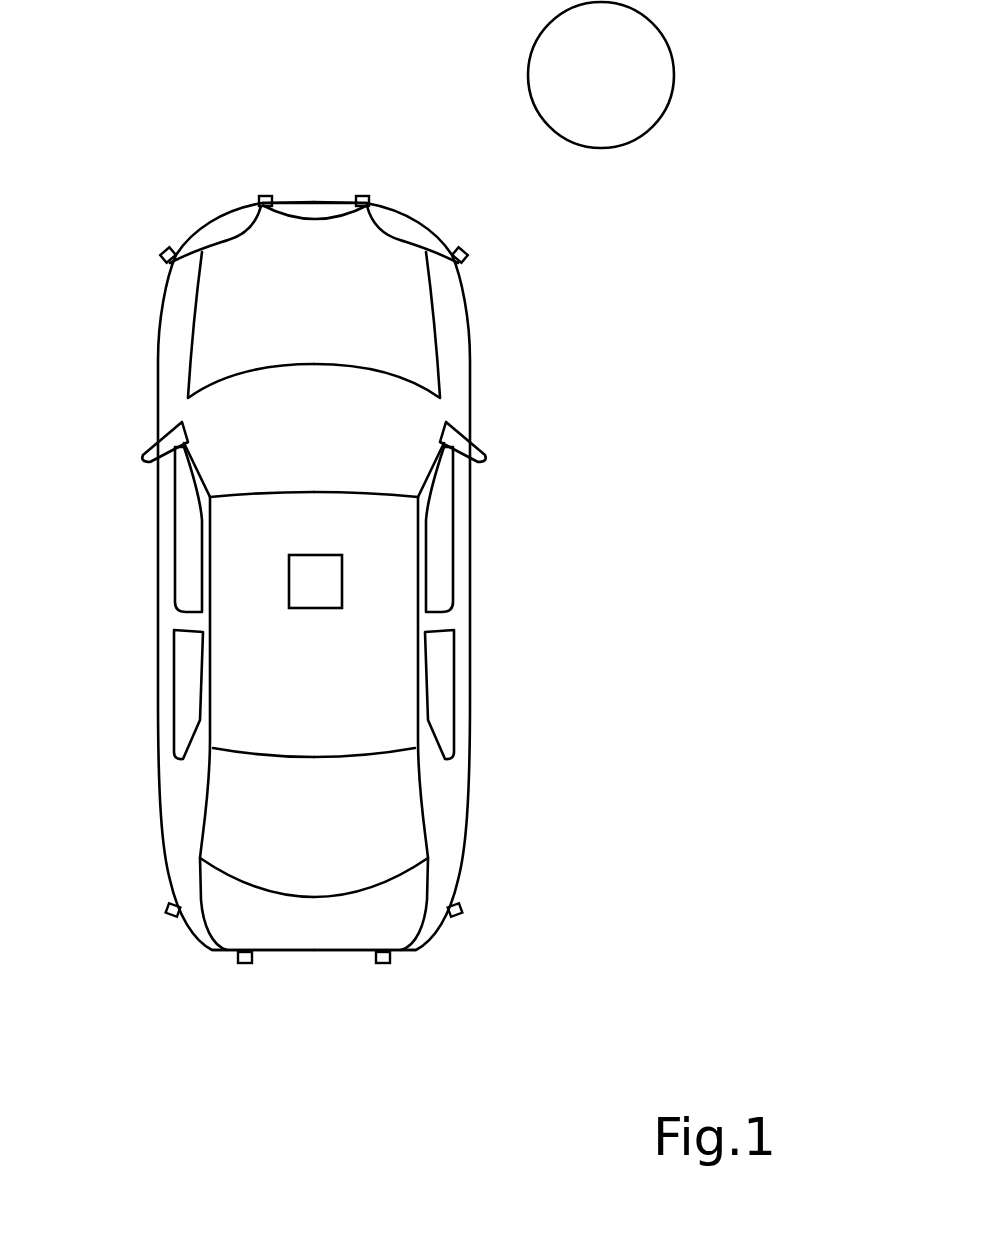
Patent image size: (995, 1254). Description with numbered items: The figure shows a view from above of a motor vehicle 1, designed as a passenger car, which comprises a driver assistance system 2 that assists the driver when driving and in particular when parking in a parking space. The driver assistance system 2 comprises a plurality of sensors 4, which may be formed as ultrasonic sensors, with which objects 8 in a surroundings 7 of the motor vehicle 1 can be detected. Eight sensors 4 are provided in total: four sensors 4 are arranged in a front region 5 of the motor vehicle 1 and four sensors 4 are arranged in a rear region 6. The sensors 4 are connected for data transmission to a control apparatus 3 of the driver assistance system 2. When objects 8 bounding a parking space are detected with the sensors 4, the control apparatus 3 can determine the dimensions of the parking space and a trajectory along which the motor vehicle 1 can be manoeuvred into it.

The motor vehicle 1 is at (312, 202).
The driver assistance system 2 is at (137, 135).
The control apparatus 3 is at (342, 577).
The sensors 4 is at (265, 196).
The front region 5 is at (332, 117).
The rear region 6 is at (292, 993).
The surroundings 7 is at (322, 33).
The objects 8 is at (632, 143).